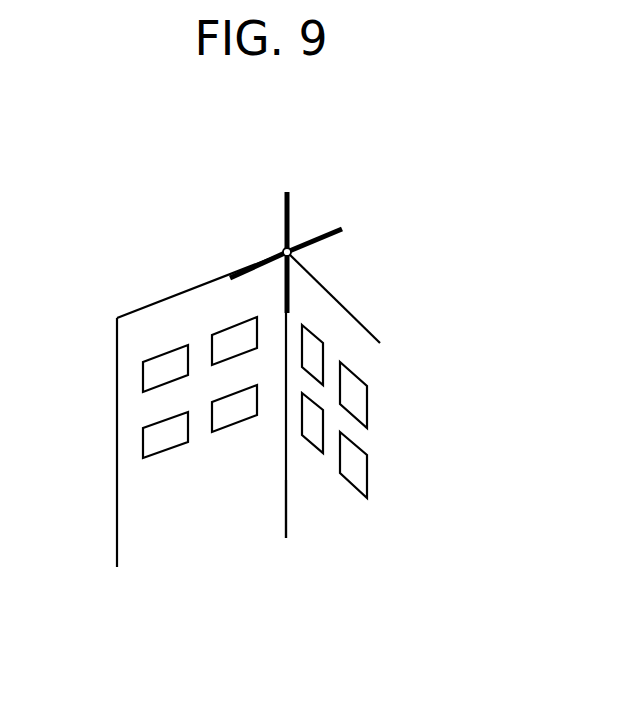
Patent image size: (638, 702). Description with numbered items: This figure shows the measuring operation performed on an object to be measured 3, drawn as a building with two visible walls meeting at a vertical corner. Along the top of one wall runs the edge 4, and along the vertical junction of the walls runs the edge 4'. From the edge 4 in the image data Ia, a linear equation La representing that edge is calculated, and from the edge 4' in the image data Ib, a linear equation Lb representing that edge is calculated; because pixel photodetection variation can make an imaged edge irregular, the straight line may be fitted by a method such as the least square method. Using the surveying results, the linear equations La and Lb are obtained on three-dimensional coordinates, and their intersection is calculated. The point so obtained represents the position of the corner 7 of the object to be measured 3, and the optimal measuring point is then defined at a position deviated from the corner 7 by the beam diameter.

The object to be measured 3 is at (163, 297).
The edge 4 is at (232, 243).
The edge 4' is at (324, 509).
The corner 7 is at (293, 254).
The linear equation La is at (338, 233).
The linear equation Lb is at (289, 203).